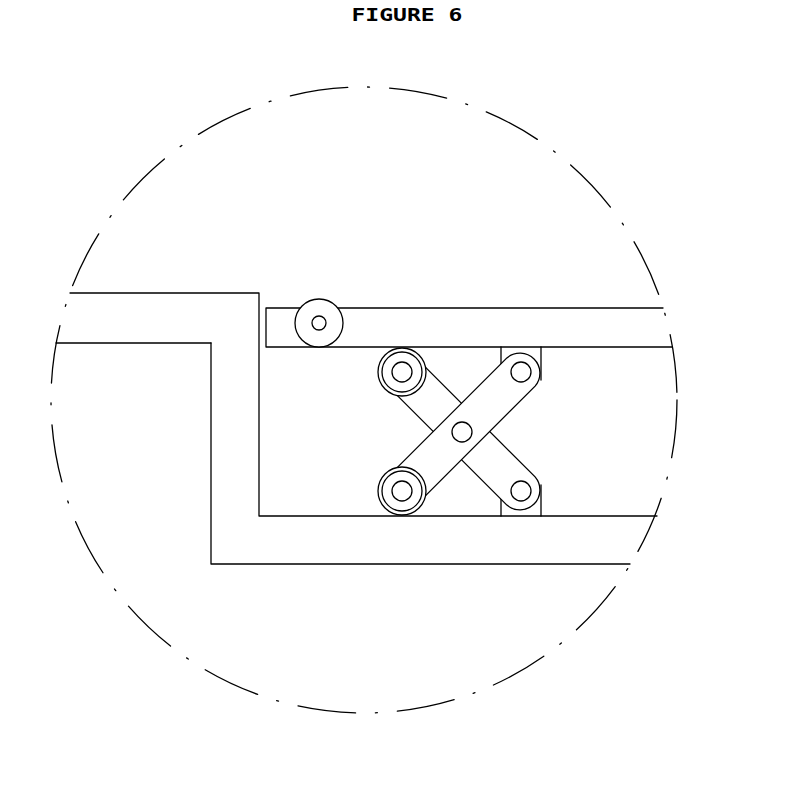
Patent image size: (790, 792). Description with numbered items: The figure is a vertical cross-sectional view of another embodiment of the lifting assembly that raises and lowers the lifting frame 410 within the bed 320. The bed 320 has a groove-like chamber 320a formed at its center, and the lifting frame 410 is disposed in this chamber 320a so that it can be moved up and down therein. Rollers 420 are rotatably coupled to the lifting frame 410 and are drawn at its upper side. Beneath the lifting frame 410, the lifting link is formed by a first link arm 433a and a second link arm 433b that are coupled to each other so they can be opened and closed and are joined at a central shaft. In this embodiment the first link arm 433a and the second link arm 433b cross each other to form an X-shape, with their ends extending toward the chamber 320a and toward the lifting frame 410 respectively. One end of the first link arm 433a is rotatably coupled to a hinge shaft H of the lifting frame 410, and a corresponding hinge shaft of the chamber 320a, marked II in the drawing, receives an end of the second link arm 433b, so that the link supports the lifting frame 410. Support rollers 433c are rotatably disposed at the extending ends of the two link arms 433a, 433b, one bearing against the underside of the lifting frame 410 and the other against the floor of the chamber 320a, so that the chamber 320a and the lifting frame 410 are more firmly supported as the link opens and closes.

The bed 320 is at (160, 305).
The chamber 320a is at (217, 507).
The lifting frame 410 is at (601, 314).
The roller 420 is at (320, 299).
The first link arm 433a is at (514, 395).
The second link arm 433b is at (512, 468).
The support roller 433c is at (420, 354).
The hinge shaft H is at (520, 363).
The lower pivot II is at (521, 491).